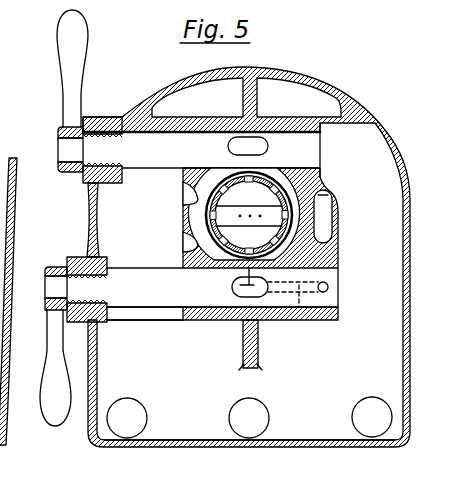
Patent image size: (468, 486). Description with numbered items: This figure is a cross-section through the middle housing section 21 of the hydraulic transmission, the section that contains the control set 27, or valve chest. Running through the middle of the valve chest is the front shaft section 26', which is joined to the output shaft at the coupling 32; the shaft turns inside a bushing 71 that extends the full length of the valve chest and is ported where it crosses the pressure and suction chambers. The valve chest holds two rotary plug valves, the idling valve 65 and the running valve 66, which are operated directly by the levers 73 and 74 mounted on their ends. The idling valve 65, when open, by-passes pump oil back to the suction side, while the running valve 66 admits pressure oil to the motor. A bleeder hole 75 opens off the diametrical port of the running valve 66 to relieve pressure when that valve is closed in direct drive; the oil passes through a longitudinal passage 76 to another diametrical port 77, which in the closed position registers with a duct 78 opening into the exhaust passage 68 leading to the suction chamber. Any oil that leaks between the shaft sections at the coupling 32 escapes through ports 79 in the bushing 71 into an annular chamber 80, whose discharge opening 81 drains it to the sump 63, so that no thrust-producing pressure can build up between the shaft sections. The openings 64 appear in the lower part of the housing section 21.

The middle housing section 21 is at (410, 262).
The front shaft section 26' is at (201, 159).
The control set 27 is at (184, 320).
The coupling 32 is at (263, 215).
The sump 63 is at (192, 436).
The openings 64 is at (262, 406).
The idling valve 65 is at (195, 133).
The running valve 66 is at (205, 318).
The passage 68 is at (303, 218).
The bushing 71 is at (192, 236).
The lever 73 is at (80, 59).
The lever 74 is at (62, 420).
The bleeder hole 75 is at (233, 285).
The longitudinal passage 76 is at (306, 321).
The diametrical port 77 is at (329, 288).
The duct 78 is at (330, 251).
The ports 79 is at (234, 168).
The annular chamber 80 is at (300, 210).
The discharge opening 81 is at (192, 207).